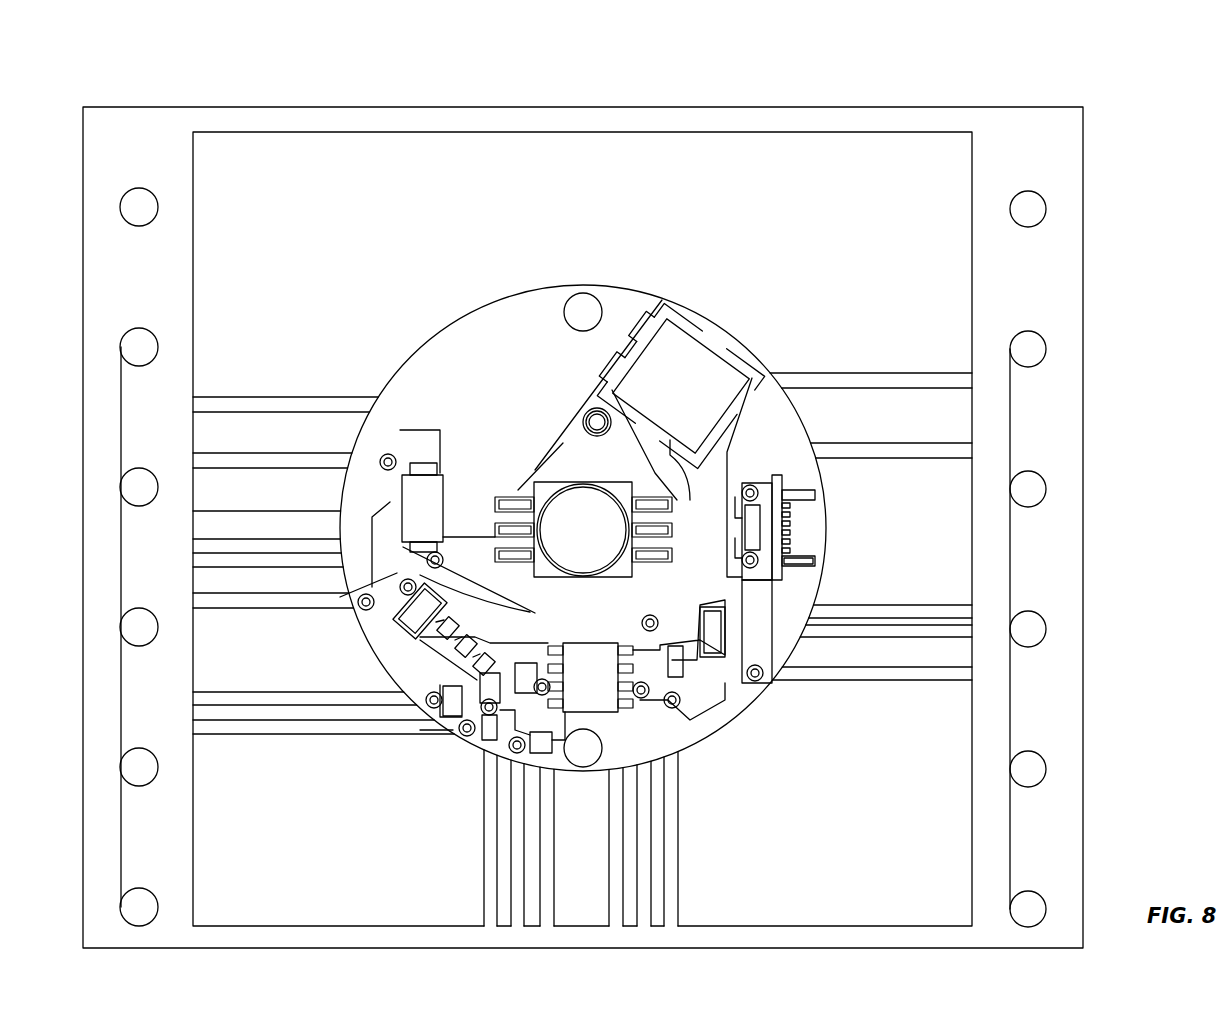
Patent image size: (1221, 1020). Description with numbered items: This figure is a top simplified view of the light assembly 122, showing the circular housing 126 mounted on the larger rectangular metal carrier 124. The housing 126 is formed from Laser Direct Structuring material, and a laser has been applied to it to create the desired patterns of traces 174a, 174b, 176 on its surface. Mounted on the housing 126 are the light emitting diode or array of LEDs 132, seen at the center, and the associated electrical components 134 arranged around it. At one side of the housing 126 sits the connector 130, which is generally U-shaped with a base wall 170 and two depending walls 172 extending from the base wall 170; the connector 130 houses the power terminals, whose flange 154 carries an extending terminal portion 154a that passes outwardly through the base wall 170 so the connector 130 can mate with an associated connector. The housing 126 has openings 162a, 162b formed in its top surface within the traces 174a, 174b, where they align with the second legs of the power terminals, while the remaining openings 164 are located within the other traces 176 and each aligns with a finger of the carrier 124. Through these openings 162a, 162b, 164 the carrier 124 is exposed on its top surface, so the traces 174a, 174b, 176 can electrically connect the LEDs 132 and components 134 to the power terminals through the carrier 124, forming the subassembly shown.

The light assembly 122 is at (925, 94).
The metal carrier 124 is at (545, 108).
The housing 126 is at (515, 325).
The connector 130 is at (832, 568).
The light emitting diode (LED) or array of LEDs 132 is at (590, 550).
The electrical components 134 is at (680, 353).
The flange 154 is at (795, 556).
The extending terminal portion 154a is at (790, 508).
The opening 162a is at (750, 482).
The opening 162b is at (740, 560).
The openings 164 is at (385, 458).
The base wall 170 is at (782, 478).
The depending walls 172 is at (830, 497).
The trace 174a is at (760, 490).
The trace 174b is at (752, 562).
The traces 176 is at (468, 548).